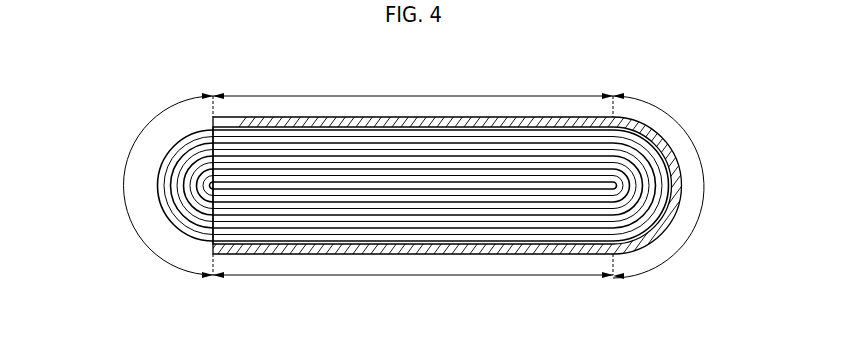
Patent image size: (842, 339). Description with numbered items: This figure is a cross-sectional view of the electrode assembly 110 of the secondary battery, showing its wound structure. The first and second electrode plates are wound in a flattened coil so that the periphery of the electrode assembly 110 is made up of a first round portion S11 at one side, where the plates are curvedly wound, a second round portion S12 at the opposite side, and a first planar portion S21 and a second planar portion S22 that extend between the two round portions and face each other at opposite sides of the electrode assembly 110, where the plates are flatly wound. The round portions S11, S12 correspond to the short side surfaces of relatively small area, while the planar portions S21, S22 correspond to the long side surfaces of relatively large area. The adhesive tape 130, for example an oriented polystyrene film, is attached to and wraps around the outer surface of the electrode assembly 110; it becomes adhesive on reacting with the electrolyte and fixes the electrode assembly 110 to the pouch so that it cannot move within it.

The electrode assembly 110 is at (165, 134).
The adhesive tape 130 is at (665, 145).
The first round portion S11 is at (149, 185).
The second round portion S12 is at (679, 186).
The first planar portion S21 is at (413, 93).
The second planar portion S22 is at (413, 280).